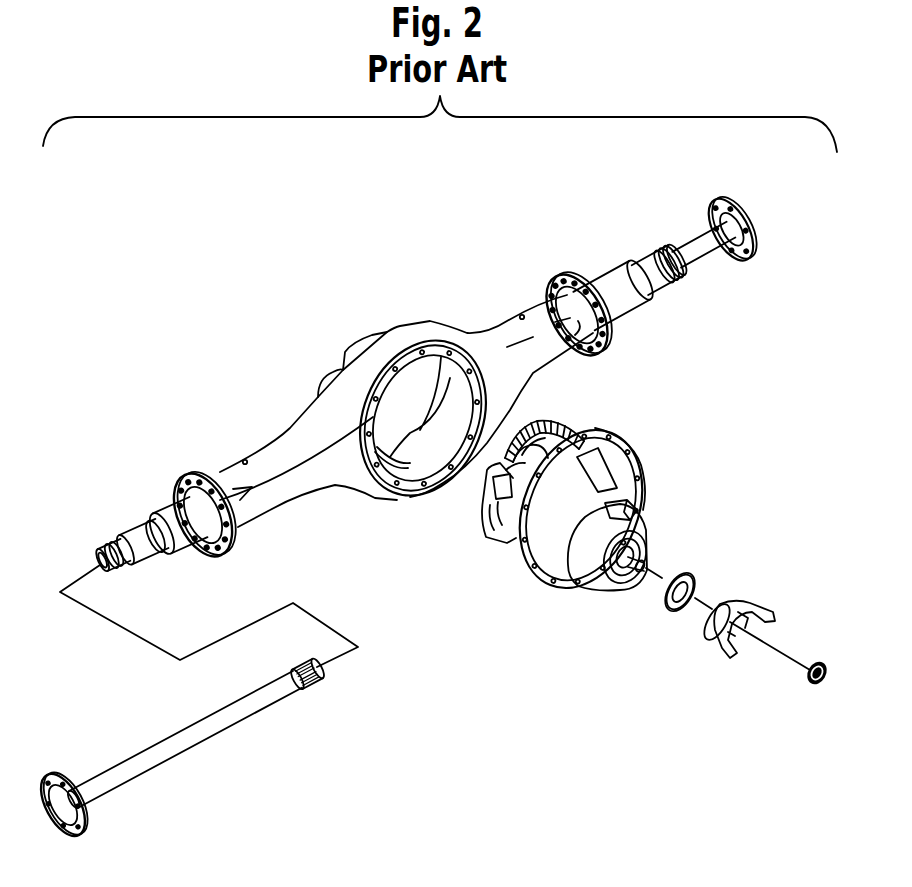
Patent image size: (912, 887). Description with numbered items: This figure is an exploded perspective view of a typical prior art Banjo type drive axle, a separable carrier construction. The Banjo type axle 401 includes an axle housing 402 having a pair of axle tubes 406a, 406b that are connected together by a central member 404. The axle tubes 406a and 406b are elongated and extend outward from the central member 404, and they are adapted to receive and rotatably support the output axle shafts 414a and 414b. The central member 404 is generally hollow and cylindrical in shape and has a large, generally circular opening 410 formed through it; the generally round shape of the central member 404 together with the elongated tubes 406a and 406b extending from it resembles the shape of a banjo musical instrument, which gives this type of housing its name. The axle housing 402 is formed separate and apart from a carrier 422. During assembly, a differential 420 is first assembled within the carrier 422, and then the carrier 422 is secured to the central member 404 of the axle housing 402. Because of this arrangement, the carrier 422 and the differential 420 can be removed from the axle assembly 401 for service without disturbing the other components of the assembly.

The Banjo type axle 401 is at (464, 235).
The axle housing 402 is at (431, 318).
The central member 404 is at (378, 355).
The axle tube 406a is at (282, 455).
The axle tube 406b is at (542, 317).
The opening 410 is at (378, 443).
The output axle shaft 414a is at (187, 742).
The output axle shaft 414b is at (695, 247).
The differential 420 is at (584, 415).
The carrier 422 is at (672, 461).